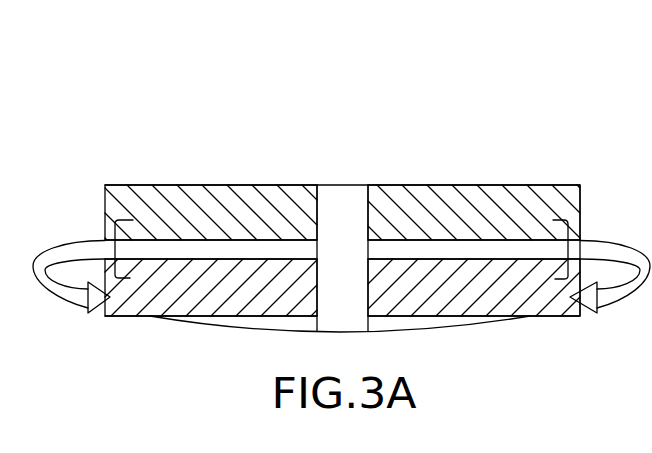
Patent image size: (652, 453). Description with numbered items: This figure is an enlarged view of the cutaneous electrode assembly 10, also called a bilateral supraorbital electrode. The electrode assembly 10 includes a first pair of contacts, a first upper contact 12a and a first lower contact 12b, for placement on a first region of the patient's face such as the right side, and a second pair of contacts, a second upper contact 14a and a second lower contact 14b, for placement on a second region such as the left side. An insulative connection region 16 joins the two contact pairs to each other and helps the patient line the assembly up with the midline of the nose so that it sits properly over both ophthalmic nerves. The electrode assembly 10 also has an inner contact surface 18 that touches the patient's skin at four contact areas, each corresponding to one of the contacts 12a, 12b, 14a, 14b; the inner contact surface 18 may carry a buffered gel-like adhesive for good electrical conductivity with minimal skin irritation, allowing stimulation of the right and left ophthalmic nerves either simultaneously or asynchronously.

The cutaneous electrode assembly 10 is at (293, 130).
The first upper contact 12a is at (200, 186).
The first lower contact 12b is at (172, 315).
The second upper contact 14a is at (425, 192).
The second lower contact 14b is at (452, 317).
The insulative connection region 16 is at (336, 187).
The inner contact surface 18 is at (513, 185).